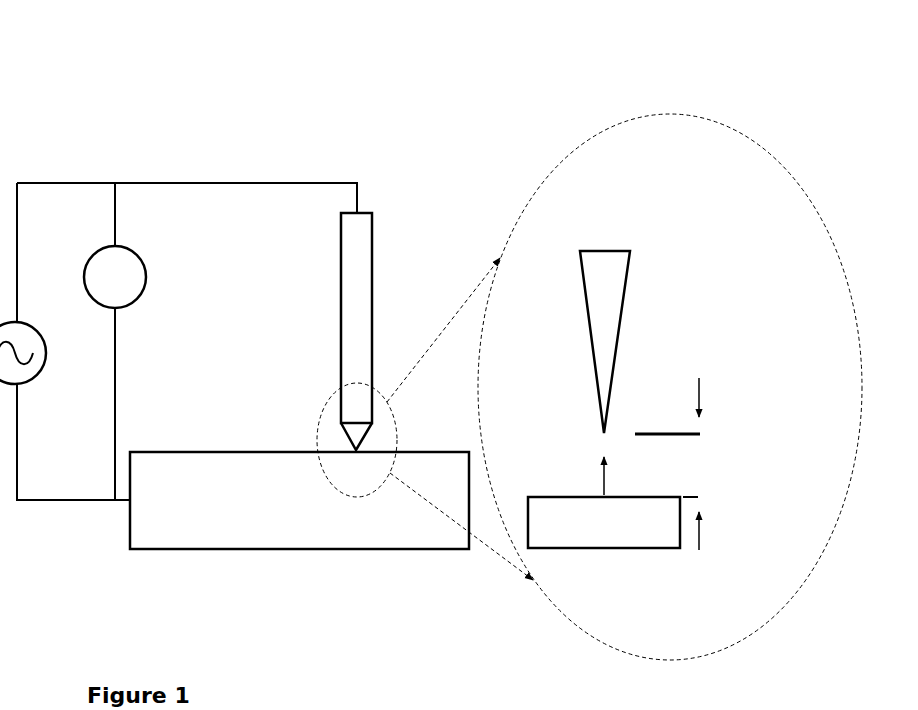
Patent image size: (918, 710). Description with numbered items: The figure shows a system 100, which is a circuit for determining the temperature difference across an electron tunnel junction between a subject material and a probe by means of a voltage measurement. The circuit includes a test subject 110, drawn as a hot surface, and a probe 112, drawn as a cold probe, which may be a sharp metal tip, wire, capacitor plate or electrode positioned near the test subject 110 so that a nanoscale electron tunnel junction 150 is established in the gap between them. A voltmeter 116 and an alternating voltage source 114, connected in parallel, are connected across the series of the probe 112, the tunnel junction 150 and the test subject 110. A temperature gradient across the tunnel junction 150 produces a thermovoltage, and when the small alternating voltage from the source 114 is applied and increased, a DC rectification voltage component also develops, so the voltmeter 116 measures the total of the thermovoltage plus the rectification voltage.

The system 100 is at (106, 57).
The test subject 110 is at (405, 500).
The probe 112 is at (372, 268).
The alternating voltage source 114 is at (37, 377).
The voltmeter 116 is at (139, 297).
The electron tunnel junction 150 is at (341, 444).